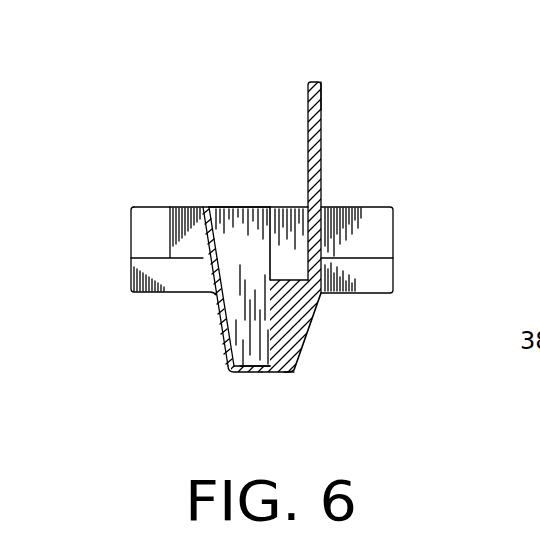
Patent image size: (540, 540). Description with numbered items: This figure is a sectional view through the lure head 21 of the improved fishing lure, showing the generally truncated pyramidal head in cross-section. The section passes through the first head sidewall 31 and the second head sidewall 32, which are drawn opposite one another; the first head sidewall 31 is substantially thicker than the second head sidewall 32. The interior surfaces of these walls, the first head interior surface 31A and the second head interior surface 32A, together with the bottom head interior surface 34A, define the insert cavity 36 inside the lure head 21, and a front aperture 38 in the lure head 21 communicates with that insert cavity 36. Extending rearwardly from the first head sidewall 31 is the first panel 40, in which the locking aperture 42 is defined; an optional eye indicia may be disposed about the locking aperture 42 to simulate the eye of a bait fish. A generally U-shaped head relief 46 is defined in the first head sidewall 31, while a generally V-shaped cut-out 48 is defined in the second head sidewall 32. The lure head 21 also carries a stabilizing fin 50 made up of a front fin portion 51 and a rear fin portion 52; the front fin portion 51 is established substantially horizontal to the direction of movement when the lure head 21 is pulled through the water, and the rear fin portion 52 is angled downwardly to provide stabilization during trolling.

The lure head 21 is at (363, 56).
The first head sidewall 31 is at (270, 351).
The first head interior surface 31A is at (299, 378).
The second head sidewall 32 is at (210, 316).
The second head interior surface 32A is at (232, 370).
The bottom head interior surface 34A is at (222, 207).
The insert cavity 36 is at (257, 230).
The front aperture 38 is at (263, 378).
The first panel 40 is at (312, 80).
The locking aperture 42 is at (323, 114).
The head relief 46 is at (283, 215).
The cut-out 48 is at (203, 248).
The stabilizing fin 50 is at (394, 232).
The front fin portion 51 is at (363, 281).
The rear fin portion 52 is at (373, 218).